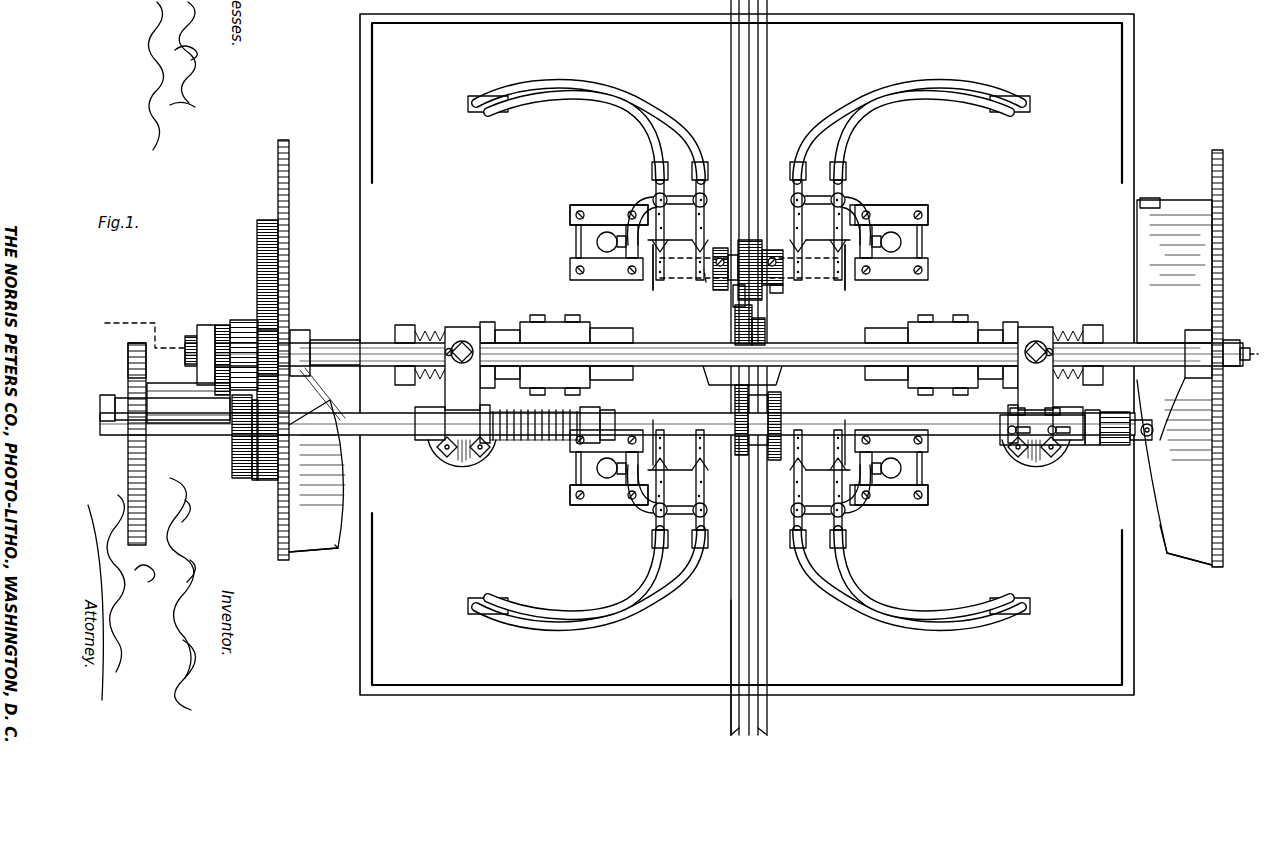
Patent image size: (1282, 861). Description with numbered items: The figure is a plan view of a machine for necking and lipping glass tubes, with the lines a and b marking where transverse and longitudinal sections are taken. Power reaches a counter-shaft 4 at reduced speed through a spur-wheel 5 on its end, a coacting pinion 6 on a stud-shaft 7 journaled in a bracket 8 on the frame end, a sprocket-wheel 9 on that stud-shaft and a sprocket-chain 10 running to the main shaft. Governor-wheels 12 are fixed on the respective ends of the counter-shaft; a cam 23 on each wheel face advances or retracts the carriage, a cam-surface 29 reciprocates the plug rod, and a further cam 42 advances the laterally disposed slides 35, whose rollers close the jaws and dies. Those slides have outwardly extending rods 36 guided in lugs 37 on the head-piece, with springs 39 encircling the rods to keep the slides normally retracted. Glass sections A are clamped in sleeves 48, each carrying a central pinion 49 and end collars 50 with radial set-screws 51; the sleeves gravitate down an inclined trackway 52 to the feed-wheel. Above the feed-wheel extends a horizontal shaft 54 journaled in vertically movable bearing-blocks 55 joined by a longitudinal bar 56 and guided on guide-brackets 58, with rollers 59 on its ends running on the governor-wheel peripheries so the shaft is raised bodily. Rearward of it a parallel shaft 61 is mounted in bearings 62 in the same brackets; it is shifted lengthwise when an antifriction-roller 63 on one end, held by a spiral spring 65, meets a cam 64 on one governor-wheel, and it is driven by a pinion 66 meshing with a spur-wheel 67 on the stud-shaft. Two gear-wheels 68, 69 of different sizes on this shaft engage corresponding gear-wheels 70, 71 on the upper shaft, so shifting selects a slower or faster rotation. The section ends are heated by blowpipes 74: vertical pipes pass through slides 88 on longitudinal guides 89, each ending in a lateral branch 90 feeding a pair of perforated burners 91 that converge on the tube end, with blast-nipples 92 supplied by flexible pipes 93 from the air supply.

The counter-shaft 4 is at (185, 352).
The spur-wheel 5 is at (257, 254).
The pinion 6 is at (285, 385).
The stud-shaft 7 is at (100, 408).
The bracket 8 is at (188, 374).
The sprocket-wheel 9 is at (128, 355).
The sprocket-chain 10 is at (128, 500).
The governor-wheels 12 is at (283, 560).
The cam 23 is at (1228, 400).
The cam-surface 29 is at (338, 548).
The slides 35 is at (552, 322).
The rods 36 is at (1000, 330).
The lugs 37 is at (487, 322).
The springs 39 is at (448, 325).
The cam 42 is at (325, 478).
The sleeves 48 is at (783, 285).
The pinion 49 is at (740, 300).
The collars 50 is at (720, 248).
The set-screws 51 is at (775, 250).
The inclined trackway 52 is at (765, 60).
The horizontal shaft 54 is at (365, 343).
The bearing-blocks 55 is at (760, 662).
The longitudinal bar 56 is at (714, 363).
The guide-brackets 58 is at (749, 385).
The rollers 59 is at (290, 330).
The parallel shaft 61 is at (666, 413).
The bearings 62 is at (430, 442).
The antifriction-roller 63 is at (1140, 440).
The cam 64 is at (1165, 230).
The spiral spring 65 is at (524, 443).
The pinion 66 is at (230, 460).
The spur-wheel 67 is at (250, 478).
The gear-wheel 68 is at (735, 405).
The gear-wheel 69 is at (781, 405).
The gear-wheel 70 is at (735, 328).
The gear-wheel 71 is at (766, 330).
The blowpipes 74 is at (749, 355).
The slides 88 is at (576, 236).
The longitudinal guides 89 is at (594, 205).
The lateral branch 90 is at (746, 272).
The perforated burners 91 is at (685, 282).
The blast-nipples 92 is at (692, 218).
The flexible pipes 93 is at (620, 110).
The glass sections A is at (706, 282).
The section line a a is at (745, 700).
The section line b b is at (680, 339).